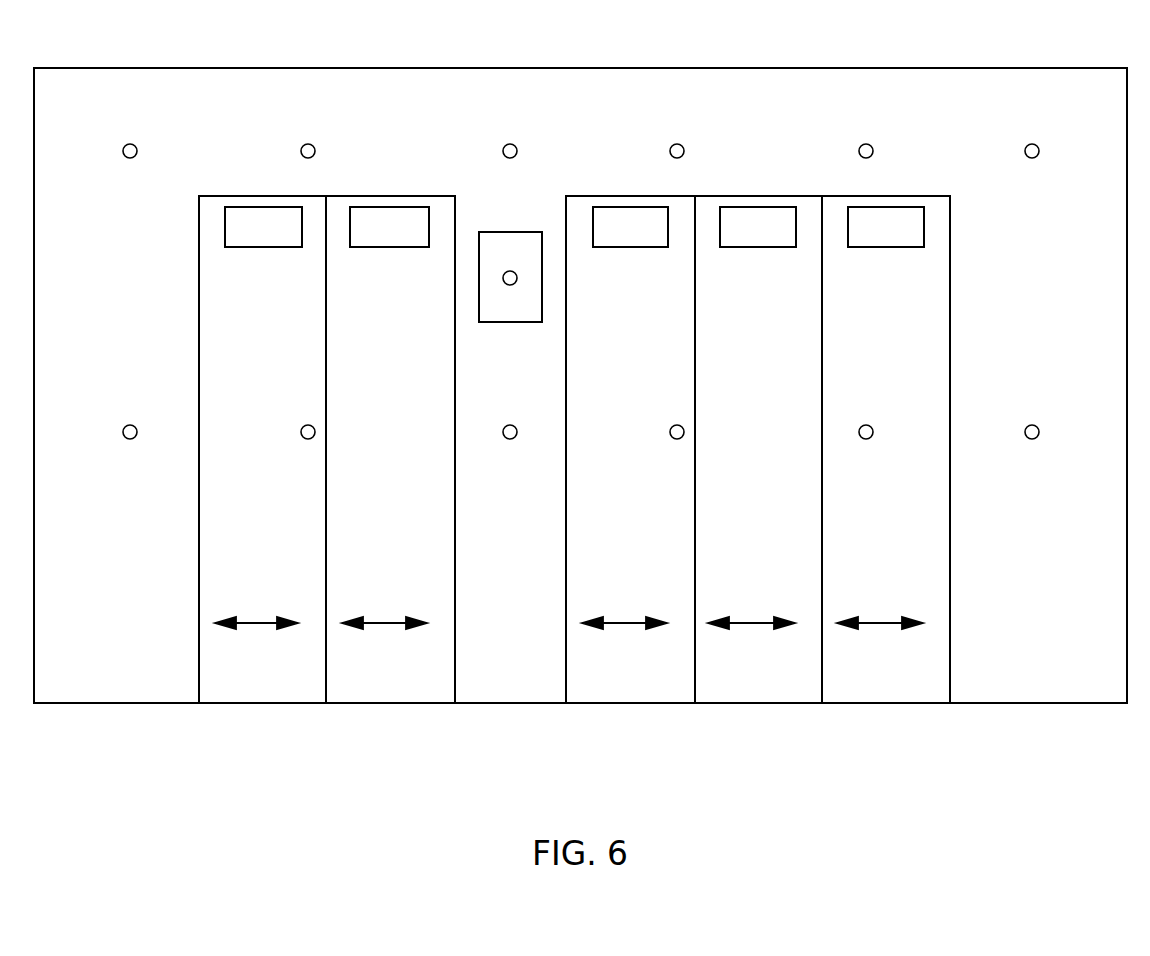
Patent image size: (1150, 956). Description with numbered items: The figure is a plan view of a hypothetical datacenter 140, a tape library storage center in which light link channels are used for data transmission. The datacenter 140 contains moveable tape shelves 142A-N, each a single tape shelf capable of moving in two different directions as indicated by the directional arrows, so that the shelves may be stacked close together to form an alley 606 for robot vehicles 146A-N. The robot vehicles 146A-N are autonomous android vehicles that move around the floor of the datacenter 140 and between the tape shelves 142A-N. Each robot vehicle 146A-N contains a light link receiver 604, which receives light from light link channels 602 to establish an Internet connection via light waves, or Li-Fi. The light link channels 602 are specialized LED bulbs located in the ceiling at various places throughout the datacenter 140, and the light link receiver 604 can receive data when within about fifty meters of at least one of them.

The datacenter 140 is at (123, 67).
The moveable tape shelves 142A-N is at (375, 678).
The robot vehicles 146A-N is at (491, 232).
The light link channels 602 is at (873, 427).
The light link receiver 604 is at (514, 271).
The alley 606 is at (512, 690).